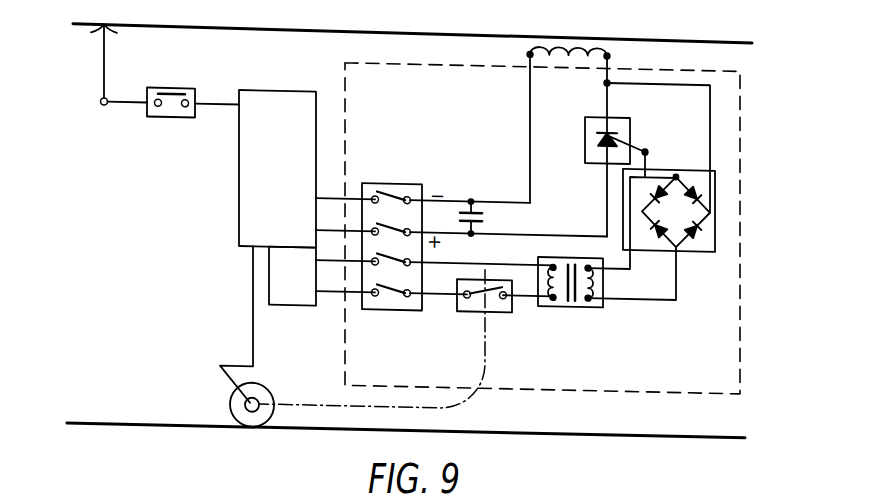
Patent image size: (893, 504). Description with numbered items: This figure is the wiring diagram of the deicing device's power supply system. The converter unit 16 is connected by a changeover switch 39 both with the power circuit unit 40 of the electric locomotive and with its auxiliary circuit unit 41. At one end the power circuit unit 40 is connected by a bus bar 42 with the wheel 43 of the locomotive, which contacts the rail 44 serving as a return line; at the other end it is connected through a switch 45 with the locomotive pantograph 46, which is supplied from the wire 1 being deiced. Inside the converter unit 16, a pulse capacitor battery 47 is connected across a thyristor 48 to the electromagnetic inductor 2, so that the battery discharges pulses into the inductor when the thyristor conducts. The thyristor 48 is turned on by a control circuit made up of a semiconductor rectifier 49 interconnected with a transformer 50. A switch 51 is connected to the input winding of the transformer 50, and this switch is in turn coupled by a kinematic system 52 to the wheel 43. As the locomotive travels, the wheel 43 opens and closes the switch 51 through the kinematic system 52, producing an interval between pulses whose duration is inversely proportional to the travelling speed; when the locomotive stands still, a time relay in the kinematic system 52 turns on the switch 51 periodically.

The wire 1 is at (271, 35).
The electromagnetic inductor 2 is at (572, 54).
The converter unit 16 is at (346, 81).
The changeover switch 39 is at (400, 184).
The power circuit unit 40 is at (240, 182).
The auxiliary circuit unit 41 is at (302, 310).
The bus bar 42 is at (253, 316).
The wheel 43 is at (230, 404).
The rail 44 is at (140, 429).
The switch 45 is at (170, 122).
The pantograph 46 is at (105, 72).
The pulse capacitor battery 47 is at (479, 211).
The thyristor 48 is at (632, 120).
The semiconductor rectifier 49 is at (701, 245).
The transformer 50 is at (593, 304).
The switch 51 is at (502, 310).
The kinematic system 52 is at (480, 369).